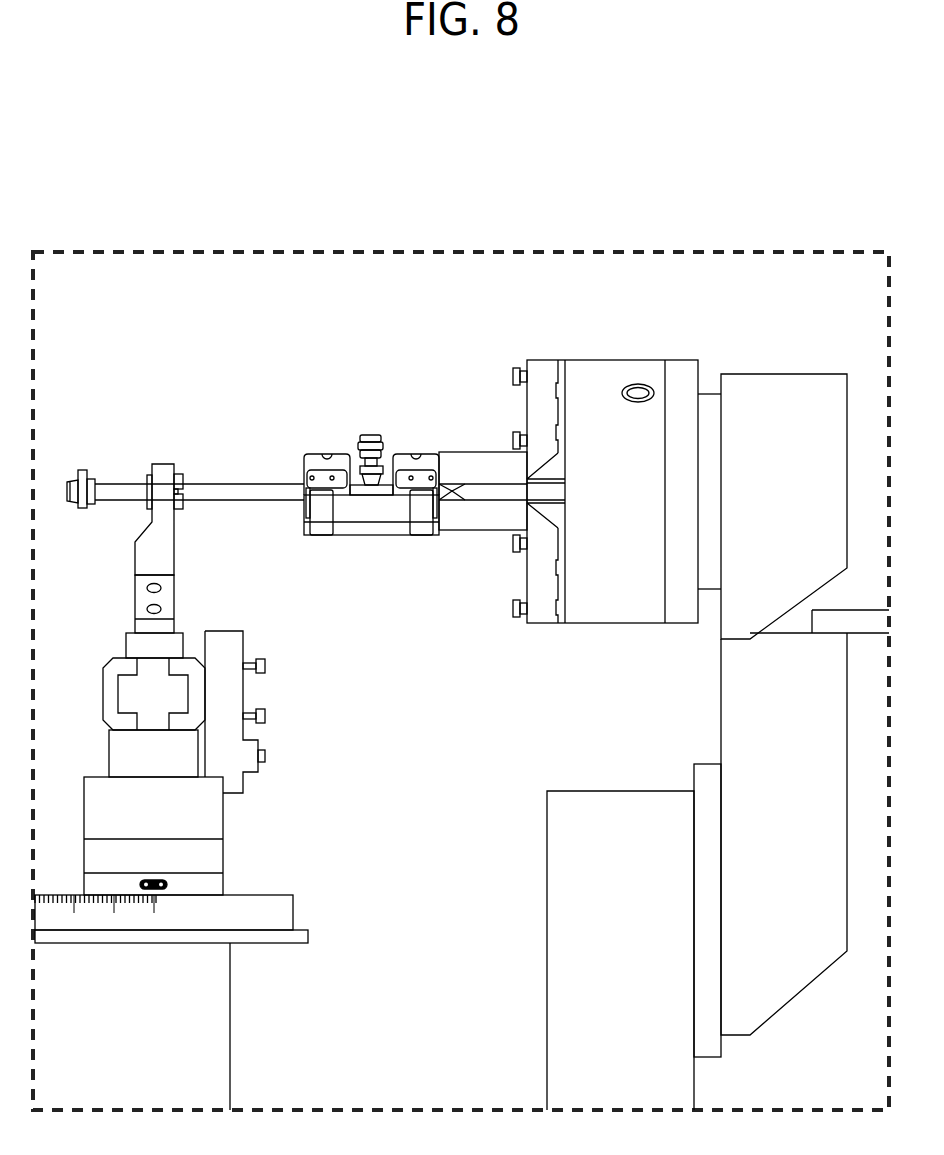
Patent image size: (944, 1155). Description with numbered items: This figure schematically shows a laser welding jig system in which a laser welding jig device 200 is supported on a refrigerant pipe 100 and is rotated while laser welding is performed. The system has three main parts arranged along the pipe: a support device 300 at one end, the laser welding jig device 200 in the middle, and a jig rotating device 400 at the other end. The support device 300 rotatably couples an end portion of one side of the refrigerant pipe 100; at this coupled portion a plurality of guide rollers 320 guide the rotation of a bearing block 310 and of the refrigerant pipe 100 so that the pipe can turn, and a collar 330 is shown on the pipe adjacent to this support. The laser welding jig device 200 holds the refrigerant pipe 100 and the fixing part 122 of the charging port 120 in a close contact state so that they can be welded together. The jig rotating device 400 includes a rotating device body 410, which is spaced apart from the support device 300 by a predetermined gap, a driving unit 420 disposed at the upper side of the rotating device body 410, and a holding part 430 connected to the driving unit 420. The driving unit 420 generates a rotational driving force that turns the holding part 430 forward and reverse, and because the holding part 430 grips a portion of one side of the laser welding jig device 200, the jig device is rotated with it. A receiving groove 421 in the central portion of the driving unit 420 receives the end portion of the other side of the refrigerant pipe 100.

The refrigerant pipe 100 is at (223, 483).
The charging port 120 is at (374, 427).
The fixing part 122 is at (386, 492).
The laser welding jig device 200 is at (371, 543).
The support device 300 is at (171, 766).
The bearing block 310 is at (135, 553).
The guide rollers 320 is at (150, 471).
The collar 330 is at (184, 512).
The jig rotating device 400 is at (664, 687).
The rotating device body 410 is at (785, 373).
The driving unit 420 is at (590, 359).
The receiving groove 421 is at (550, 503).
The holding part 430 is at (467, 530).